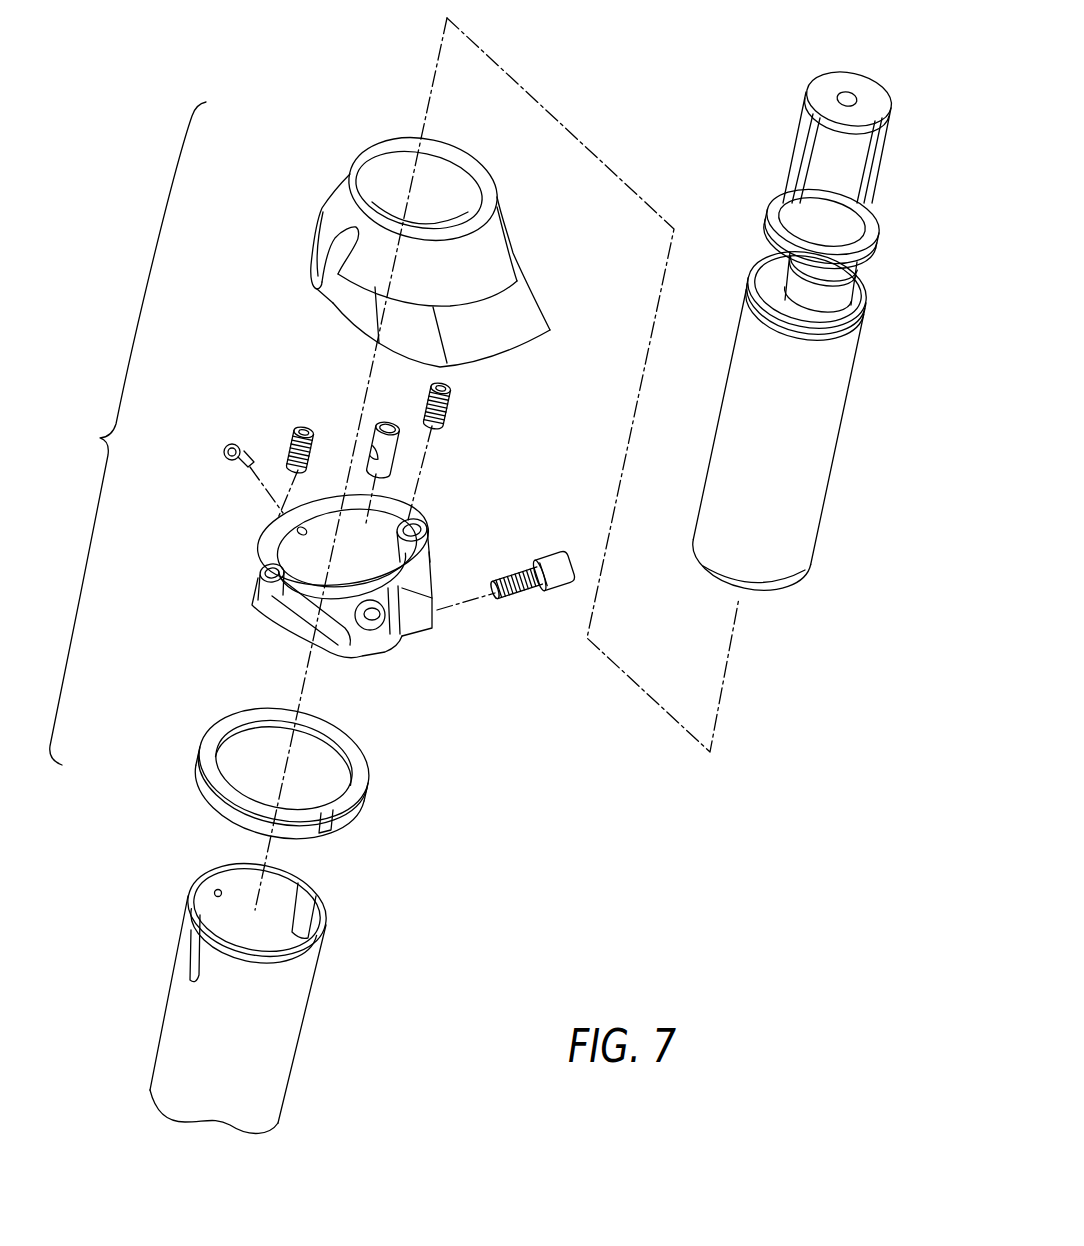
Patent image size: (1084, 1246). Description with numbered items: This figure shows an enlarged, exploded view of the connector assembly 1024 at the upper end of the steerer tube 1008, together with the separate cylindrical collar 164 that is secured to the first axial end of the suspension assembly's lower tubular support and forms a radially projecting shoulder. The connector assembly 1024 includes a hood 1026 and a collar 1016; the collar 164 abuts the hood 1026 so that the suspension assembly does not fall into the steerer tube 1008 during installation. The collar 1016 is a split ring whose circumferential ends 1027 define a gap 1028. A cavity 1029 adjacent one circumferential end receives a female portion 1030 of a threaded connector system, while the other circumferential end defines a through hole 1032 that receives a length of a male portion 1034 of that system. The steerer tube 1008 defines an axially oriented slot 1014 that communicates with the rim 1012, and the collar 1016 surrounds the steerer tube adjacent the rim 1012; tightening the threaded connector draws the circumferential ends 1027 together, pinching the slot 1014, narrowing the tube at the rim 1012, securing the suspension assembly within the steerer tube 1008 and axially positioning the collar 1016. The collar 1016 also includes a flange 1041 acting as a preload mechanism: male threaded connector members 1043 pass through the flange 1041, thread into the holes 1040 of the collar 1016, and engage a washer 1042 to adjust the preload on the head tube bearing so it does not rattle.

The hood 1026 is at (380, 146).
The connector assembly 1024 is at (124, 433).
The male threaded connector members 1043 is at (290, 436).
The female portion of threaded connector system 1030 is at (400, 455).
The flange 1041 is at (270, 537).
The holes 1040 is at (420, 521).
The gap 1028 is at (378, 608).
The male portion of threaded connector system 1034 is at (548, 558).
The through hole 1032 is at (433, 612).
The circumferential ends 1027 is at (422, 640).
The collar 1016 is at (331, 586).
The cavity 1029 is at (415, 635).
The washer 1042 is at (370, 788).
The slot 1014 is at (310, 897).
The rim 1012 is at (298, 992).
The steerer tube 1008 is at (158, 1007).
The cylindrical collar 164 is at (868, 293).